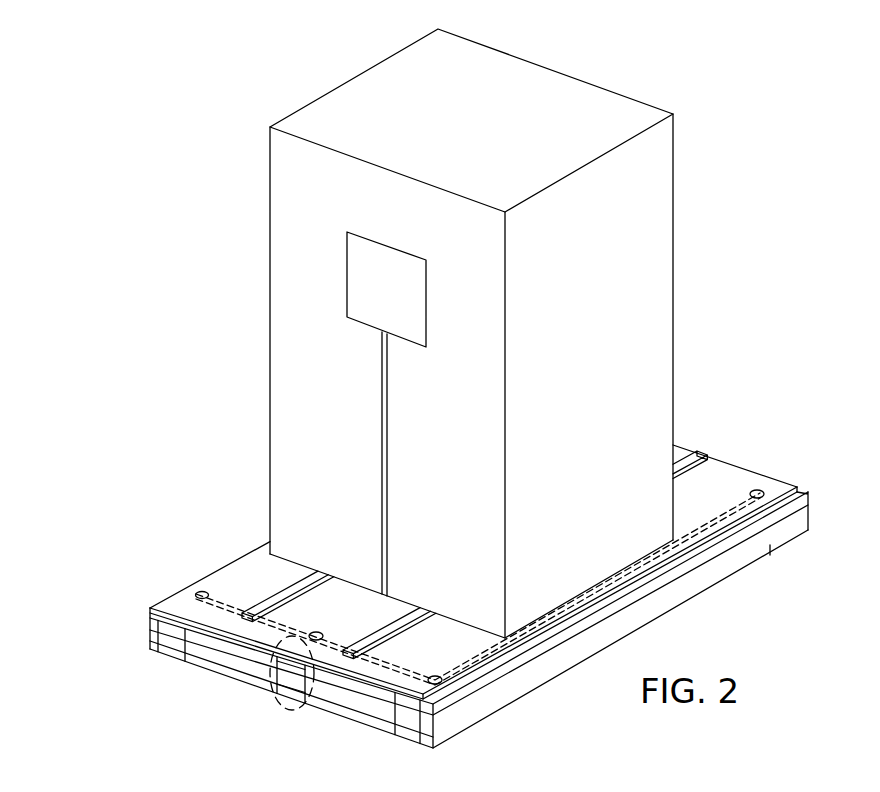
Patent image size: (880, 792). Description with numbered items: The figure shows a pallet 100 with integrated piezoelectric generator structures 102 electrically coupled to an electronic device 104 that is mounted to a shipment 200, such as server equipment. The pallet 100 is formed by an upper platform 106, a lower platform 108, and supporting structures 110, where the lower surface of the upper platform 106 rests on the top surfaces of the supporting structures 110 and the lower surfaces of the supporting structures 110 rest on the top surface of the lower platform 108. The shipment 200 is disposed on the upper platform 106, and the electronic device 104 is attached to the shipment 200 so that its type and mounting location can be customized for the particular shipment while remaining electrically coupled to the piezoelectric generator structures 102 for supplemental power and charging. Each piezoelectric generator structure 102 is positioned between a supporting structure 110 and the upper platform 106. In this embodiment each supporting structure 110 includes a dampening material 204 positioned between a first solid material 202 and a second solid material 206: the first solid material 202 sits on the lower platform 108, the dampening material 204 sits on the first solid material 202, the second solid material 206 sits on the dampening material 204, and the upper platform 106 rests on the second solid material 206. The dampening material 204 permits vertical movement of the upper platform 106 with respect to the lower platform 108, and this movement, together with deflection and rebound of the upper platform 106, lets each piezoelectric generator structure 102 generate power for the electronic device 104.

The pallet 100 is at (160, 508).
The piezoelectric generator structure 102 is at (315, 631).
The electronic device 104 is at (378, 240).
The upper platform 106 is at (733, 453).
The lower platform 108 is at (197, 661).
The supporting structure 110 is at (293, 688).
The shipment 200 is at (264, 337).
The first solid material 202 is at (278, 693).
The dampening material 204 is at (316, 687).
The second solid material 206 is at (283, 661).